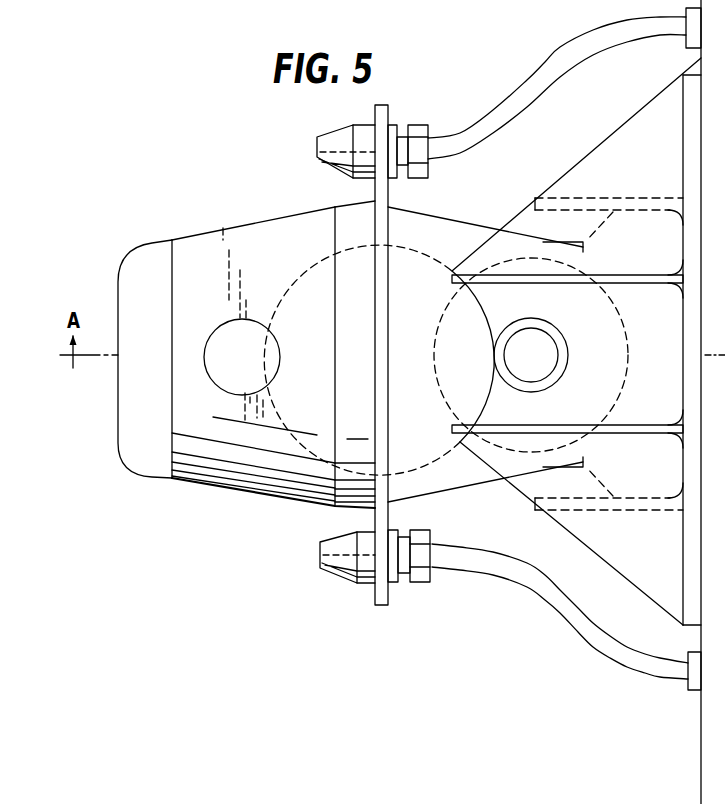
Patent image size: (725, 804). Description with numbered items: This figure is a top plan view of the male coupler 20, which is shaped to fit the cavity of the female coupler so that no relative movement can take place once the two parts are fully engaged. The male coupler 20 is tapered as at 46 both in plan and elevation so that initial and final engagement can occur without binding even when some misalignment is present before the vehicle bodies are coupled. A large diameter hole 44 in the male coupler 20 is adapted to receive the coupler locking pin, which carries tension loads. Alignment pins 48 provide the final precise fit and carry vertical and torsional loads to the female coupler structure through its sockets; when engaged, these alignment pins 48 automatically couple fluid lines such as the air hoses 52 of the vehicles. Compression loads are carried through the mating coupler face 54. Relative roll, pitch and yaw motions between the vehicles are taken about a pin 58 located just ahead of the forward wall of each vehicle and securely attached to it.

The male coupler 20 is at (273, 385).
The large diameter hole 44 is at (236, 335).
The taper 46 is at (223, 356).
The alignment pins 48 is at (346, 341).
The air hoses 52 is at (564, 349).
The coupler face 54 is at (338, 355).
The pin 58 is at (446, 360).